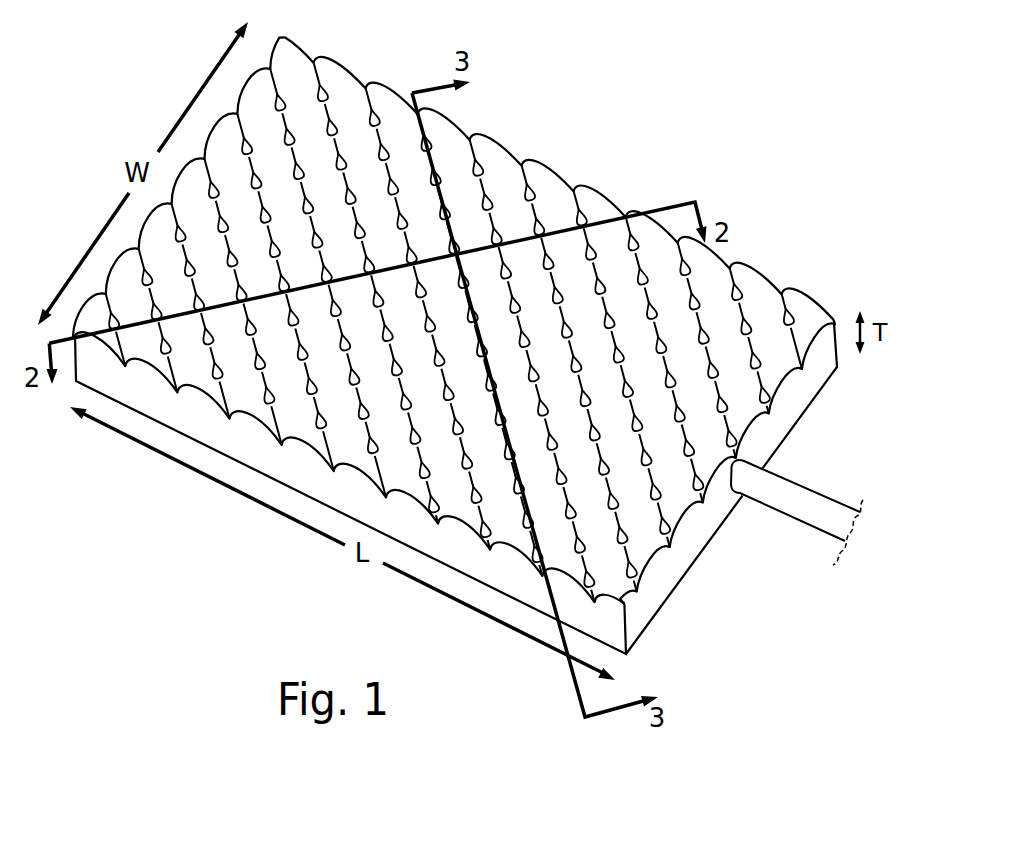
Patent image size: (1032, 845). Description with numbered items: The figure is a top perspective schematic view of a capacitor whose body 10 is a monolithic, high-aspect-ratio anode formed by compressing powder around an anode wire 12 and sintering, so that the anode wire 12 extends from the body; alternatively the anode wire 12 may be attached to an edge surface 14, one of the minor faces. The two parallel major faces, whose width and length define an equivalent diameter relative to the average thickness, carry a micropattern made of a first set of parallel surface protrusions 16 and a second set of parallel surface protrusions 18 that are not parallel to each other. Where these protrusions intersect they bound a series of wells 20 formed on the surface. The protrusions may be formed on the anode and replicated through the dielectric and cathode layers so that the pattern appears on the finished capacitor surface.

The body of the capacitor 10 is at (799, 249).
The anode wire 12 is at (813, 518).
The edge surface 14 is at (707, 522).
The first set of parallel surface protrusions 16 is at (602, 203).
The second set of parallel surface protrusions 18 is at (633, 560).
The wells 20 is at (725, 403).